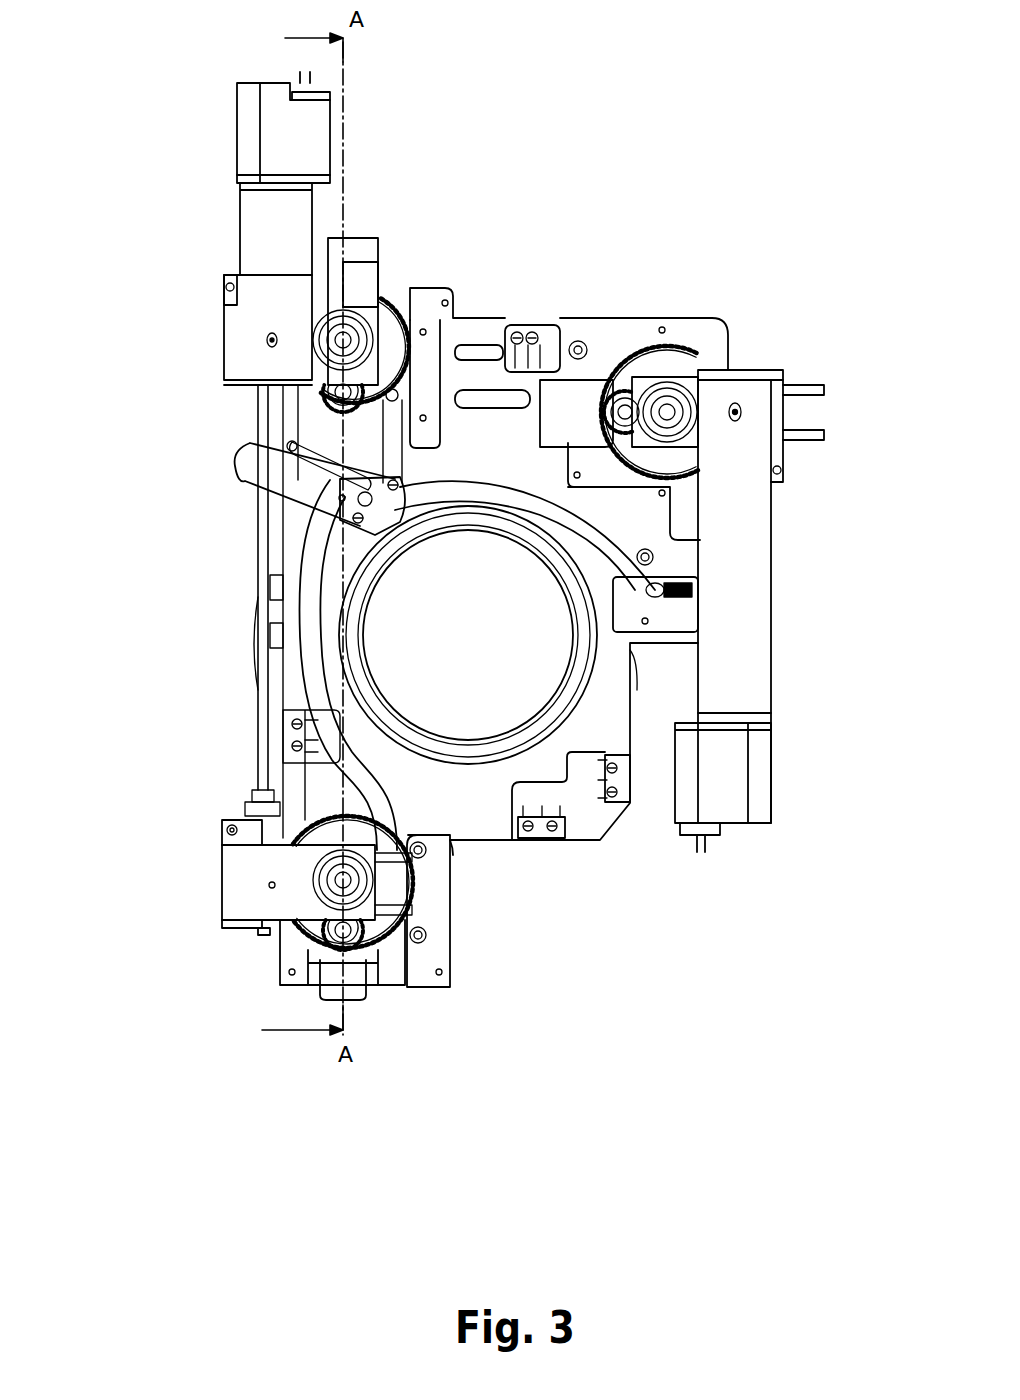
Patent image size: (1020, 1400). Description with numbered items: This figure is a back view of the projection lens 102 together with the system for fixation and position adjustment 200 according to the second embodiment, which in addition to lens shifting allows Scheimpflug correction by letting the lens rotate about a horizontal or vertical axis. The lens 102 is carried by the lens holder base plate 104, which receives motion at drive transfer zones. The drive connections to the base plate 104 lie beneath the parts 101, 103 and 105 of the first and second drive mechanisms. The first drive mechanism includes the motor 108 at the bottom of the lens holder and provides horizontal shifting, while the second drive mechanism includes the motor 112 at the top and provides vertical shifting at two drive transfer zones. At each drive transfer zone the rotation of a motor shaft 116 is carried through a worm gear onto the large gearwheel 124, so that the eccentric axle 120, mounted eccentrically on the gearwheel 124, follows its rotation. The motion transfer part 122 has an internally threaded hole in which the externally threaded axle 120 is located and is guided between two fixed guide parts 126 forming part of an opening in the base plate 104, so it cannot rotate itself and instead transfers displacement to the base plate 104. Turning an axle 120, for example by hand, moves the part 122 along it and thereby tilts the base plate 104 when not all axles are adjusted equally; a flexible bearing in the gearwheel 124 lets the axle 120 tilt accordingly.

The system for fixation and position adjustment 200 is at (687, 200).
The part of the first drive mechanism 101 is at (740, 335).
The projection lens 102 is at (446, 640).
The part of the second drive mechanism 103 is at (242, 418).
The base plate 104 is at (497, 790).
The part of the second drive mechanism 105 is at (198, 929).
The motor 108 is at (752, 775).
The motor 112 is at (275, 132).
The motor shaft 116 is at (258, 518).
The eccentric axle 120 is at (290, 962).
The motion transfer part 122 is at (622, 398).
The large gearwheel 124 is at (397, 318).
The fixed guide parts 126 is at (582, 368).